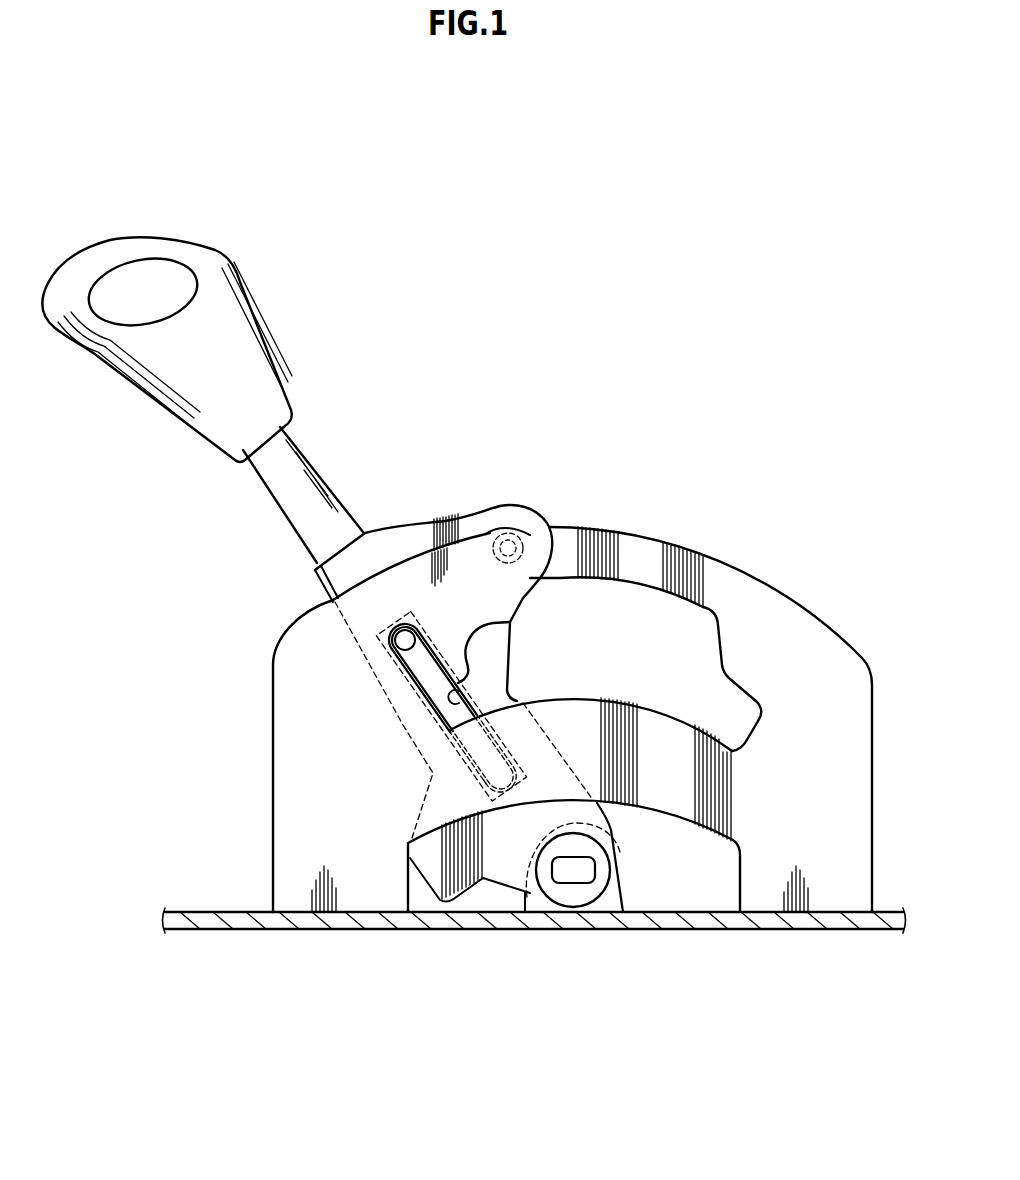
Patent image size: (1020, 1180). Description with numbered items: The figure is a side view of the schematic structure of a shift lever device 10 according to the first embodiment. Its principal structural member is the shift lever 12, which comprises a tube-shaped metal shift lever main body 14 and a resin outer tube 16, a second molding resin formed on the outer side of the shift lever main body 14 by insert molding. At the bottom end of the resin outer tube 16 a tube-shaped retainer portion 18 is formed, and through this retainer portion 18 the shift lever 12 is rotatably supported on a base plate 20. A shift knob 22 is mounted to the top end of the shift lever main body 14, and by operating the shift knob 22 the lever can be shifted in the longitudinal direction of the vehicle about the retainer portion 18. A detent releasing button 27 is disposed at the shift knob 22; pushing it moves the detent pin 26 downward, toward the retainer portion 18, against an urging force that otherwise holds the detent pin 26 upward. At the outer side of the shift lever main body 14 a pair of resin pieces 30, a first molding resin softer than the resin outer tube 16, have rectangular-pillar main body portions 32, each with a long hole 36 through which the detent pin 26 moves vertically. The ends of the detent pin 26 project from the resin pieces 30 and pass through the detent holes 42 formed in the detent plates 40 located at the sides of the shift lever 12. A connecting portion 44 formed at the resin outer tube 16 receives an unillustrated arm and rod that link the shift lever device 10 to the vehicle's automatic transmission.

The shift lever device 10 is at (644, 372).
The shift lever 12 is at (283, 517).
The shift lever main body 14 is at (317, 497).
The resin outer tube 16 is at (387, 693).
The retainer portion 18 is at (572, 895).
The base plate 20 is at (787, 929).
The shift knob 22 is at (168, 390).
The detent pin 26 is at (360, 669).
The detent releasing button 27 is at (147, 278).
The resin pieces 30 is at (415, 734).
The main body portions 32 is at (422, 783).
The long hole 36 is at (470, 700).
The detent plates 40 is at (770, 582).
The detent holes 42 is at (632, 584).
The connecting portion 44 is at (513, 620).